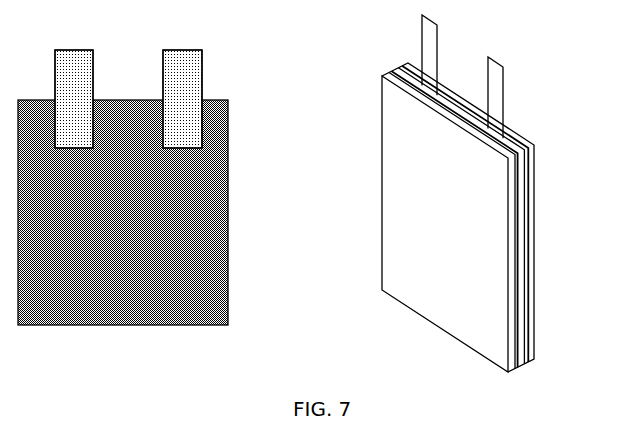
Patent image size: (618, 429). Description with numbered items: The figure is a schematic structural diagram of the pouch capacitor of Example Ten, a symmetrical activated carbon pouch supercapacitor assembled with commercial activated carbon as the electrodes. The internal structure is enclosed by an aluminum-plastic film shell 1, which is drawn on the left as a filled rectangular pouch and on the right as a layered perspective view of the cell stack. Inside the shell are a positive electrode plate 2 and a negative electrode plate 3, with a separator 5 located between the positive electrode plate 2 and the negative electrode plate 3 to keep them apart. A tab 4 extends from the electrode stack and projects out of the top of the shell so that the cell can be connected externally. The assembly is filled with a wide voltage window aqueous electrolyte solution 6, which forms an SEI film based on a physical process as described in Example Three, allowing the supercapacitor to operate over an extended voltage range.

The aluminum-plastic film shell 1 is at (228, 108).
The positive electrode plate 2 is at (533, 165).
The negative electrode plate 3 is at (527, 197).
The tab 4 is at (530, 238).
The separator 5 is at (202, 140).
The wide voltage window aqueous electrolyte solution 6 is at (198, 262).